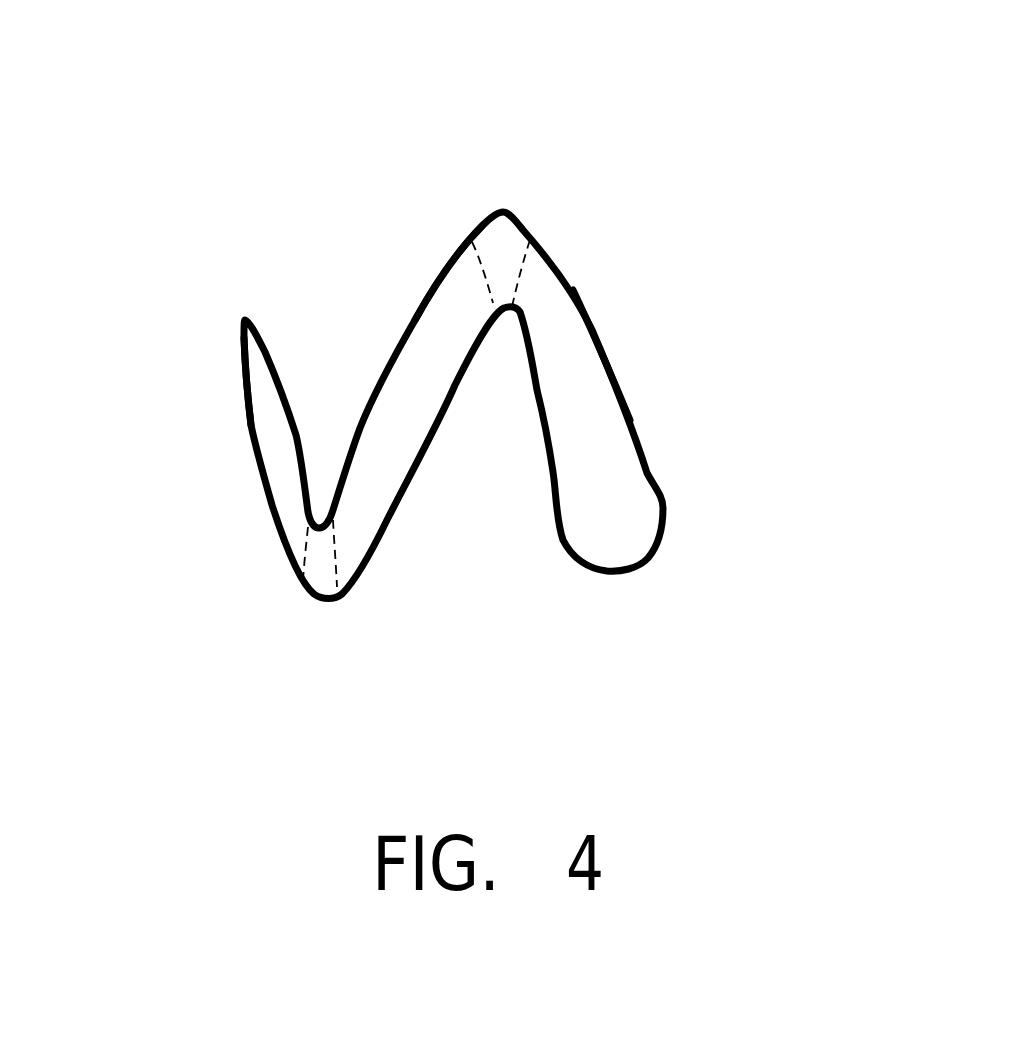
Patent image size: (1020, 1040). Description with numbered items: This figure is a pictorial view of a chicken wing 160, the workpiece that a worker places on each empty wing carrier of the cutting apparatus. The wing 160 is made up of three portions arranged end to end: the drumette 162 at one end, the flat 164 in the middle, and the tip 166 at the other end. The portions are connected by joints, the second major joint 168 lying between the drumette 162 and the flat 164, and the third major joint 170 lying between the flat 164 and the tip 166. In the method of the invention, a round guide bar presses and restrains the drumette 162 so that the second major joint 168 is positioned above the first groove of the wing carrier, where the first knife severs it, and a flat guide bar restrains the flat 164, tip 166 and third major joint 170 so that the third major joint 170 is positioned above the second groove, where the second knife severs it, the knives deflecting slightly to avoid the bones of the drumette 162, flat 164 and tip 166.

The wing 160 is at (437, 310).
The drumette 162 is at (731, 327).
The flat 164 is at (346, 250).
The tip 166 is at (167, 493).
The second major joint 168 is at (610, 168).
The third major joint 170 is at (239, 614).